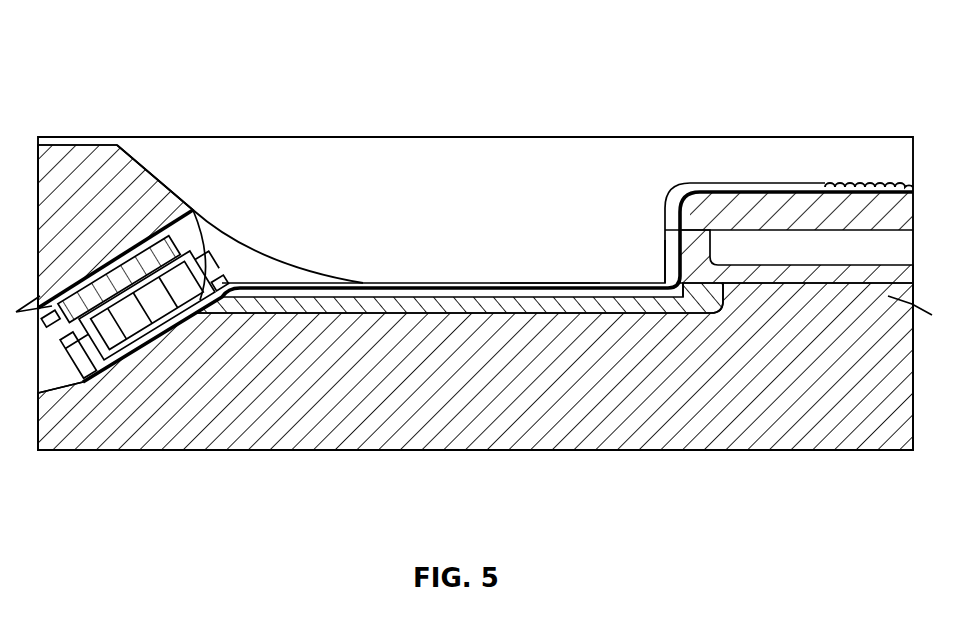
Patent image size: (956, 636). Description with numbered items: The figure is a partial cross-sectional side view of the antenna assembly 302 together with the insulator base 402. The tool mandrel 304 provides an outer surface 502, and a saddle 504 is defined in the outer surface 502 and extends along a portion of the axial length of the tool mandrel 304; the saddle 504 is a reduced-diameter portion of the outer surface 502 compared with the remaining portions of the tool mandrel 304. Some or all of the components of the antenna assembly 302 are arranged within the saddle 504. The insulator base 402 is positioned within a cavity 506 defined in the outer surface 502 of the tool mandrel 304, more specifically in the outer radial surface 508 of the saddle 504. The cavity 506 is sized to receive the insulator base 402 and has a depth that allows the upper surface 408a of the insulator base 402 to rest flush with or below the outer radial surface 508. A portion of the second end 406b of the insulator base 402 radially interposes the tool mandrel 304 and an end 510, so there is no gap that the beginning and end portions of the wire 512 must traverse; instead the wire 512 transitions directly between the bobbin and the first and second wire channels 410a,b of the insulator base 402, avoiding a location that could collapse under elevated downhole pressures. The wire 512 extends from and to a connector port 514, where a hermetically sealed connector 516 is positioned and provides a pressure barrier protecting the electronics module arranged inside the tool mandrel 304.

The antenna assembly 302 is at (112, 50).
The tool mandrel 304 is at (247, 437).
The insulator base 402 is at (484, 278).
The second end 406b is at (718, 333).
The upper surface 408a is at (547, 283).
The first and second wire channels 410a,b is at (563, 286).
The outer surface 502 is at (115, 145).
The saddle 504 is at (193, 210).
The cavity 506 is at (432, 307).
The outer radial surface 508 is at (834, 283).
The end 510 is at (660, 235).
The wire 512 is at (370, 285).
The connector port 514 is at (207, 262).
The hermetically sealed connector 516 is at (118, 356).